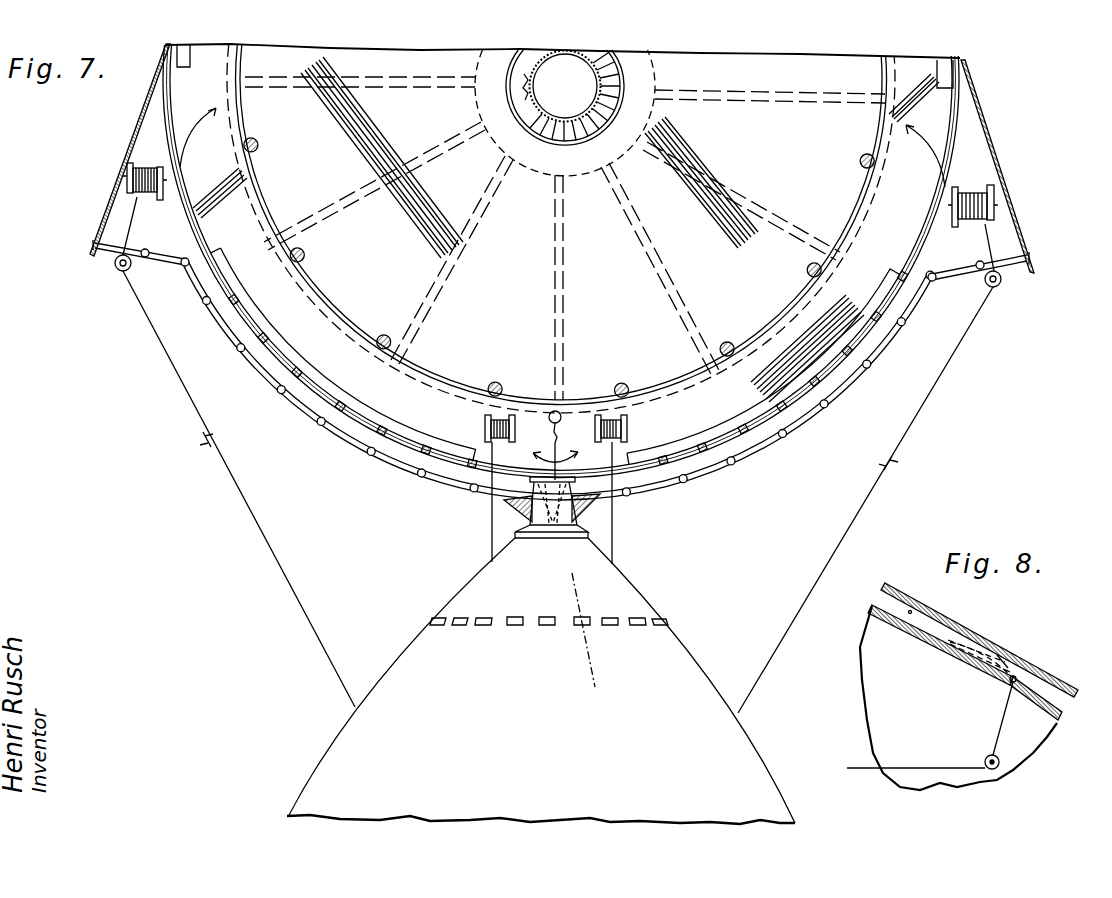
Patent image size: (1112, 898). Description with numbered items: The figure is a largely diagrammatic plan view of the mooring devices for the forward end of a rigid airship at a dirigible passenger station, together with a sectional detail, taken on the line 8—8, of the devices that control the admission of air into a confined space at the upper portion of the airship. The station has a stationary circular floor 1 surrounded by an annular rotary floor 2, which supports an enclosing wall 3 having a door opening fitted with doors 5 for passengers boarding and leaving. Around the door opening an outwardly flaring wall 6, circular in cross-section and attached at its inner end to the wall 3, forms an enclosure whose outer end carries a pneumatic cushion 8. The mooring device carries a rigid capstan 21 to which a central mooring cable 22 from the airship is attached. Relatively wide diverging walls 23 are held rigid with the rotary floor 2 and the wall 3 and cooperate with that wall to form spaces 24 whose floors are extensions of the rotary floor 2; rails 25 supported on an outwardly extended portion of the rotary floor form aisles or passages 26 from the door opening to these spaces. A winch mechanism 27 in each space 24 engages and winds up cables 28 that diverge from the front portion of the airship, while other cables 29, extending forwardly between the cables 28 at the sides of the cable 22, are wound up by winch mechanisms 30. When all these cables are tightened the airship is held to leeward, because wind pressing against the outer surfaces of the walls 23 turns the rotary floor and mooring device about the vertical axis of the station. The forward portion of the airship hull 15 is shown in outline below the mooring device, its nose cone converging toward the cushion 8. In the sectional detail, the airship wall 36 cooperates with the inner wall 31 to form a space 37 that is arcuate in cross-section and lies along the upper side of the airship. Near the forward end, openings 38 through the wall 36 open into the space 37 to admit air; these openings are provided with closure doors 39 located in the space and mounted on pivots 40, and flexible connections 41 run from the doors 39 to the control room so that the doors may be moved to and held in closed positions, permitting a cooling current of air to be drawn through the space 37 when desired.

In FIG. 7, the stationary circular floor 1 is at (850, 200).
In FIG. 7, the annular rotary floor 2 is at (666, 412).
In FIG. 7, the enclosing wall 3 is at (702, 452).
In FIG. 7, the doors 5 is at (552, 480).
In FIG. 7, the outwardly flaring wall 6 is at (550, 515).
In FIG. 7, the pneumatic cushion 8 is at (566, 589).
In FIG. 7, the conical hopper 15 is at (330, 744).
In FIG. 7, the capstan 21 is at (560, 413).
In FIG. 7, the central mooring cable 22 is at (558, 466).
In FIG. 7, the diverging walls 23 is at (130, 136).
In FIG. 7, the spaces 24 is at (118, 196).
In FIG. 7, the rails 25 is at (397, 461).
In FIG. 7, the aisles or passages 26 is at (352, 433).
In FIG. 7, the winch mechanism 27 is at (148, 168).
In FIG. 7, the cables 28 is at (296, 608).
In FIG. 7, the cables 29 is at (492, 521).
In FIG. 7, the winch mechanisms 30 is at (486, 424).
In FIG. 8, the wall 31 is at (925, 633).
In FIG. 7, the wall 36 is at (742, 746).
In FIG. 8, the wall 36 is at (940, 612).
In FIG. 8, the space 37 is at (1047, 689).
In FIG. 7, the openings 38 is at (514, 617).
In FIG. 8, the openings 38 is at (1007, 657).
In FIG. 7, the closure doors 39 is at (632, 618).
In FIG. 8, the closure doors 39 is at (975, 650).
In FIG. 8, the pivots 40 is at (1016, 675).
In FIG. 8, the flexible connections 41 is at (1003, 723).